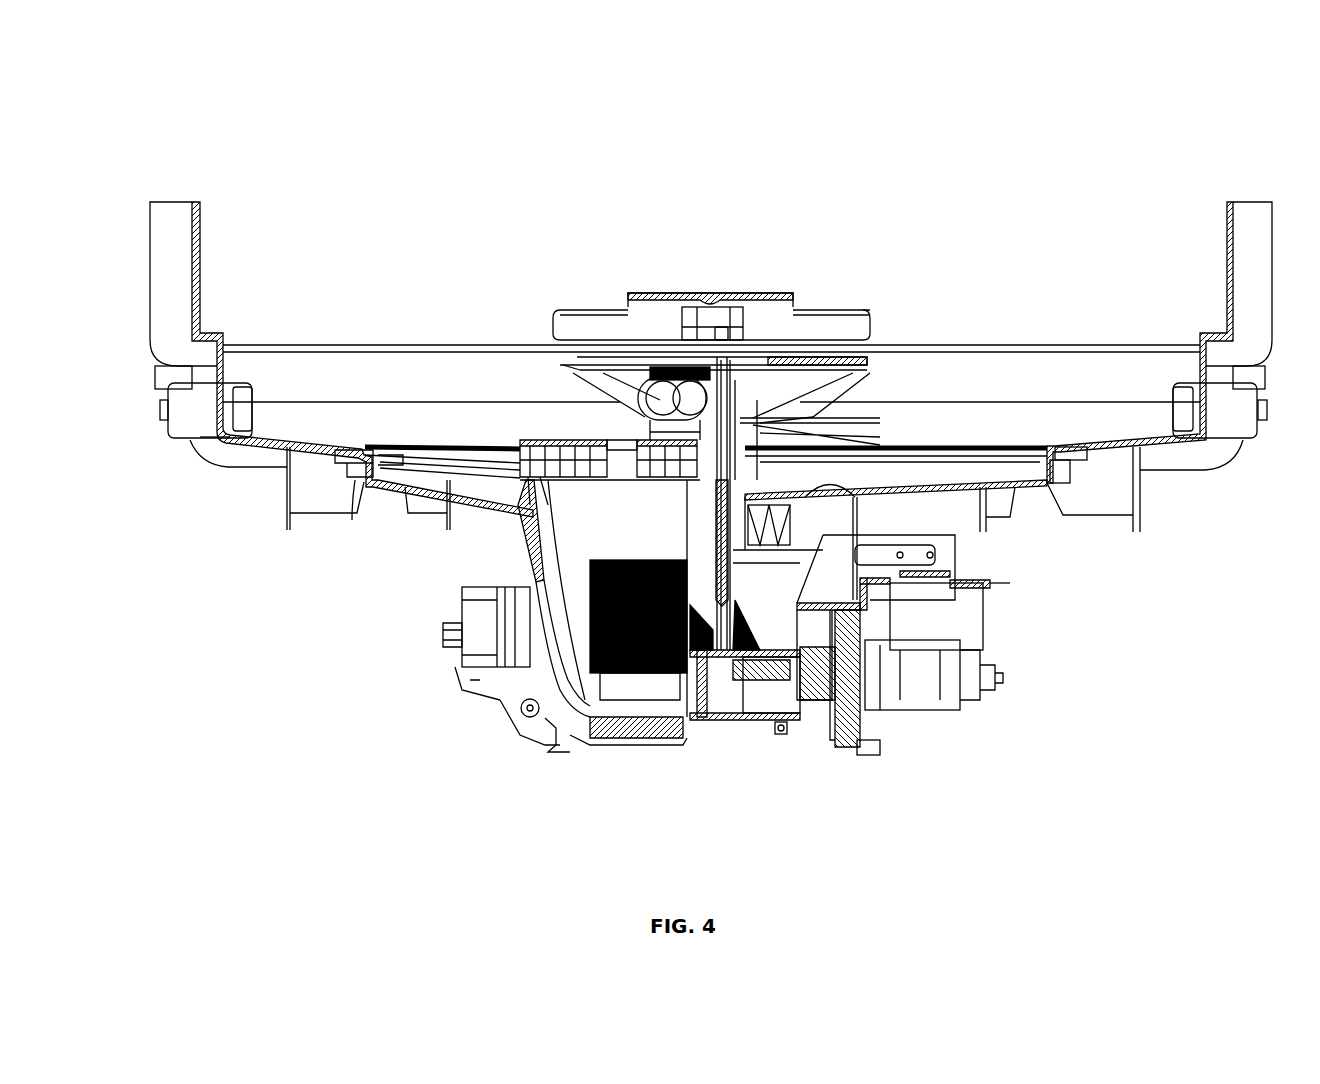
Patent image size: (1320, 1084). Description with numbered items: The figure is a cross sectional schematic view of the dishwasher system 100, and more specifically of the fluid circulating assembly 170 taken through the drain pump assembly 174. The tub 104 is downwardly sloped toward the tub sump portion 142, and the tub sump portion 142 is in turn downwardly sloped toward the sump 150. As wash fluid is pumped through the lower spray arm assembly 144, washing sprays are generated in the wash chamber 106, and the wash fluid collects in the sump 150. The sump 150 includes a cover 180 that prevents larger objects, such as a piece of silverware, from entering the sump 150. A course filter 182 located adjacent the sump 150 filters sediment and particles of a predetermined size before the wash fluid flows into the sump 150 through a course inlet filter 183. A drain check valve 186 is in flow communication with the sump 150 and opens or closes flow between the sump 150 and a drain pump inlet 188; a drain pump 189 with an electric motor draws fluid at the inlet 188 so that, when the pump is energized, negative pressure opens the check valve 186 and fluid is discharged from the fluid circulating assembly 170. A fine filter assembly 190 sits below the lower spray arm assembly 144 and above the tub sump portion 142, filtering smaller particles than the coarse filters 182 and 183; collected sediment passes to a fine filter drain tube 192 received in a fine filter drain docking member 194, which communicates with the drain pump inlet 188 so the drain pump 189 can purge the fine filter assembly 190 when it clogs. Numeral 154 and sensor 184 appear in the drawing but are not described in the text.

The dishwasher system 100 is at (878, 128).
The tub 104 is at (203, 243).
The wash chamber 106 is at (1173, 216).
The tub sump portion 142 is at (390, 487).
The lower spray arm assembly 144 is at (772, 297).
The sump 150 is at (530, 548).
The axis 154 is at (663, 332).
The fluid circulating assembly 170 is at (872, 842).
The drain pump assembly 174 is at (314, 652).
The cover 180 is at (548, 445).
The course filter 182 is at (433, 445).
The course inlet filter 183 is at (556, 733).
The sensor 184 is at (460, 650).
The drain check valve 186 is at (690, 735).
The drain pump inlet 188 is at (723, 690).
The drain pump 189 is at (812, 730).
The fine filter assembly 190 is at (885, 352).
The fine filter drain tube 192 is at (882, 405).
The fine filter drain docking member 194 is at (890, 548).